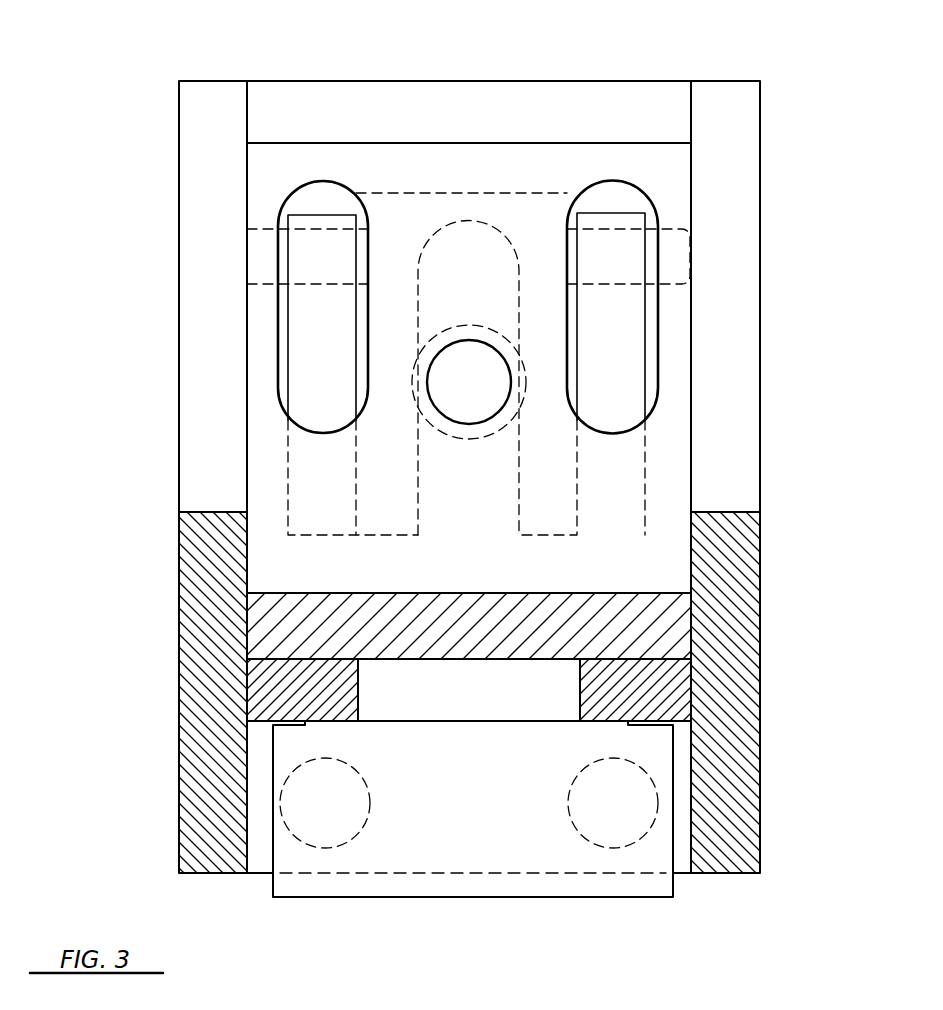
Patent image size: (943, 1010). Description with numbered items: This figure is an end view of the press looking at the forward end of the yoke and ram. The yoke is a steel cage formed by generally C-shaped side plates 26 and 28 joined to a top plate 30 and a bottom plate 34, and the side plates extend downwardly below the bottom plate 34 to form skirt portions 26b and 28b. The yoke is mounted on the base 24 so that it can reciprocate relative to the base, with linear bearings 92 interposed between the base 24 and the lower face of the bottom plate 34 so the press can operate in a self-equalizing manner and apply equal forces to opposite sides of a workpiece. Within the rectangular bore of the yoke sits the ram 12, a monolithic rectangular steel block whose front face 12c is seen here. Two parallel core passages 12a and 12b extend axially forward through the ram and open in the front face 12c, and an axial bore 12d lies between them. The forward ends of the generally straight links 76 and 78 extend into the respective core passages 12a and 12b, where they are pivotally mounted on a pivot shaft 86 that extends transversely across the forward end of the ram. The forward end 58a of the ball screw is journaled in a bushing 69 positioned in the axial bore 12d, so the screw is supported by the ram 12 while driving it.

The ram 12 is at (427, 152).
The core passage 12a is at (329, 191).
The core passage 12b is at (612, 196).
The front face 12c is at (446, 179).
The axial bore 12d is at (475, 351).
The base 24 is at (415, 900).
The side plate 26 is at (733, 80).
The skirt portion 26b is at (760, 770).
The side plate 28 is at (217, 87).
The skirt portion 28b is at (178, 798).
The top plate 30 is at (610, 80).
The bottom plate 34 is at (503, 593).
The forward end of ball screw 58a is at (452, 388).
The bushing 69 is at (465, 440).
The link 76 is at (303, 333).
The link 78 is at (597, 332).
The pivot shaft 86 is at (671, 228).
The linear bearings 92 is at (277, 680).